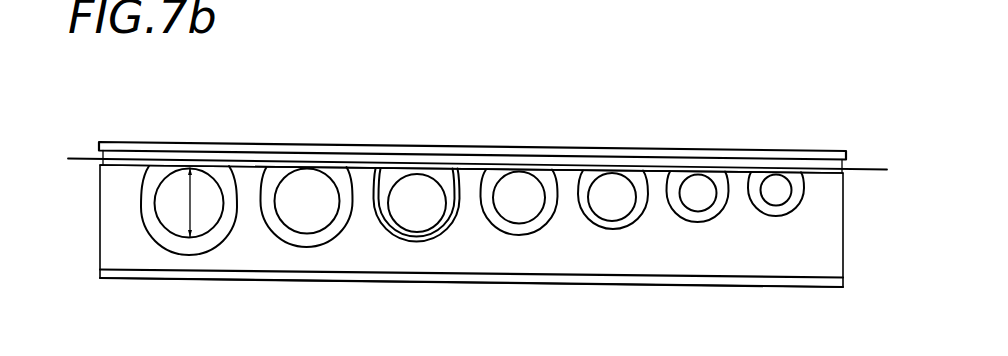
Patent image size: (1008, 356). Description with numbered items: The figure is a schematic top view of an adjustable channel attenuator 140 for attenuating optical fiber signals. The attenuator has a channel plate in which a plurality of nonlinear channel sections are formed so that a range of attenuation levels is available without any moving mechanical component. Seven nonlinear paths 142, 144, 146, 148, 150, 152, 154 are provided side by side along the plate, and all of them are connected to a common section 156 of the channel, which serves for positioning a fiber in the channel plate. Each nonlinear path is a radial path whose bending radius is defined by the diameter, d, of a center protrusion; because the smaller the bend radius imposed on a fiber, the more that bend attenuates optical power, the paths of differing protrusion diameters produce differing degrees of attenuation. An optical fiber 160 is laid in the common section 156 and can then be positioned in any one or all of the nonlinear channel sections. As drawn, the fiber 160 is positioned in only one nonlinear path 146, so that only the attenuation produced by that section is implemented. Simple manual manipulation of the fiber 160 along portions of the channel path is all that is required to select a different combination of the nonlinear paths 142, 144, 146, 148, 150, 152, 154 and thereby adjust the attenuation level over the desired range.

The adjustable channel attenuator 140 is at (85, 222).
The nonlinear path 142 is at (173, 242).
The nonlinear path 144 is at (295, 240).
The nonlinear path 146 is at (403, 237).
The nonlinear path 148 is at (505, 228).
The nonlinear path 150 is at (603, 225).
The nonlinear path 152 is at (690, 215).
The nonlinear path 154 is at (768, 210).
The common section 156 is at (637, 167).
The optical fiber 160 is at (877, 168).